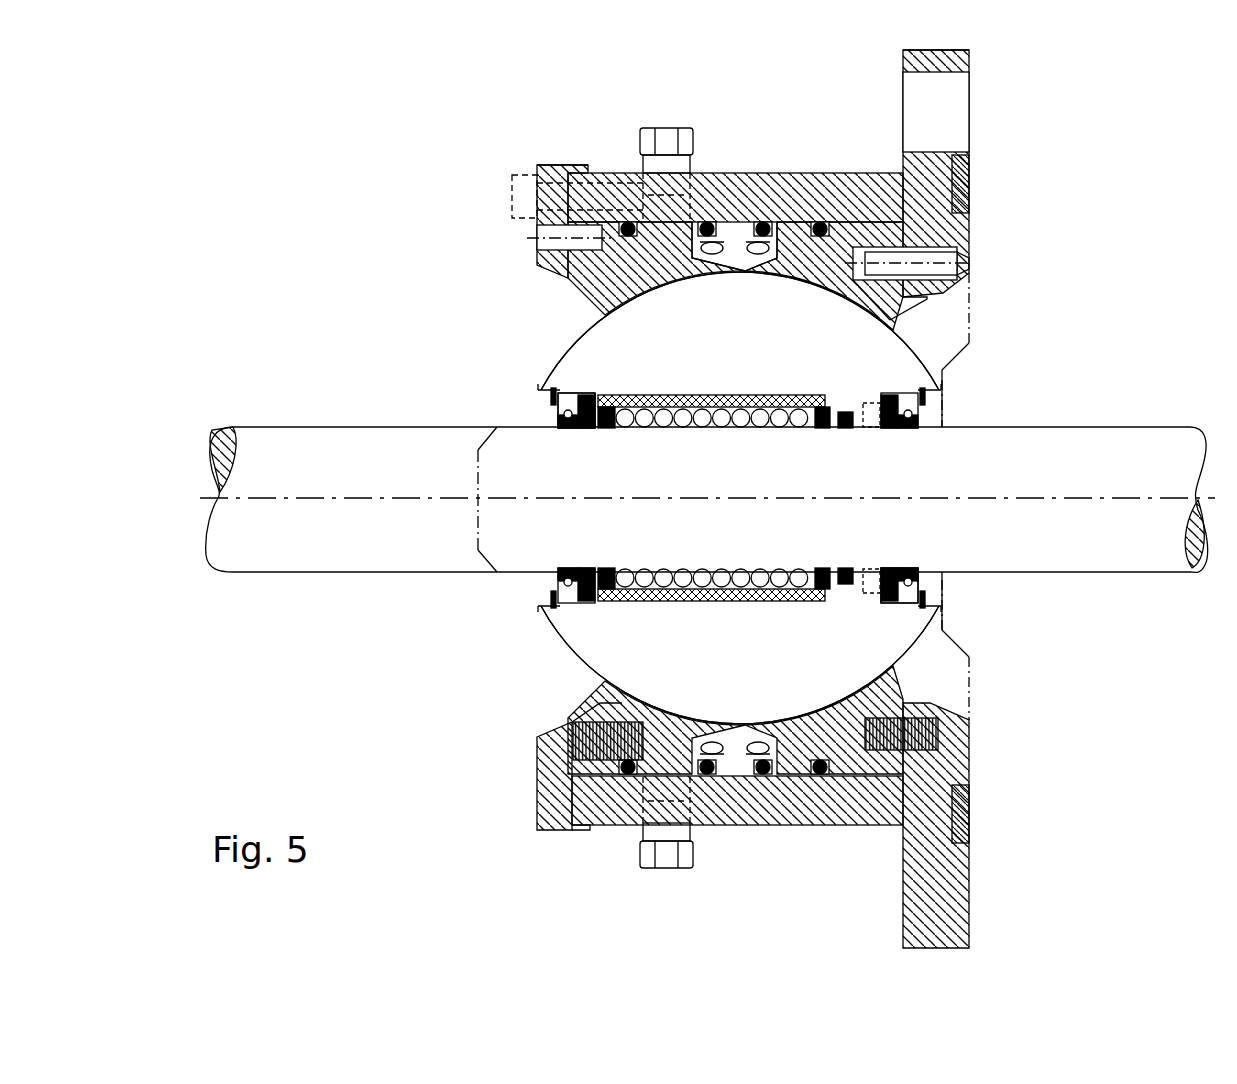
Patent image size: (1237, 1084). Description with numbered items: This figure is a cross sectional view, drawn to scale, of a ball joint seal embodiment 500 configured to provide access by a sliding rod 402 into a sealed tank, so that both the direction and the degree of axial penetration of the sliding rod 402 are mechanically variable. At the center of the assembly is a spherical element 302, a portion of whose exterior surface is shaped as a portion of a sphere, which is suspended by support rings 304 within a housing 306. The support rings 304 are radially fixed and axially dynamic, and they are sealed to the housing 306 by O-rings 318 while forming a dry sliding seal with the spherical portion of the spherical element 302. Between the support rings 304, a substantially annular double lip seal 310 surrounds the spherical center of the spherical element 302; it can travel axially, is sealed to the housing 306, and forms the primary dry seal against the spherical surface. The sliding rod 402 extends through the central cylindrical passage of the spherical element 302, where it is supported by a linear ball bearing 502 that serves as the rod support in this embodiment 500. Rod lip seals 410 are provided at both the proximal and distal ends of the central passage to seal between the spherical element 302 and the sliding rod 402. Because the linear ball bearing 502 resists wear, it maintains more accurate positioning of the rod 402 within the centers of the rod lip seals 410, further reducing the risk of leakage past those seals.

The embodiment 500 is at (452, 148).
The spherical element 302 is at (768, 332).
The support rings 304 is at (905, 316).
The housing 306 is at (808, 173).
The double lip seal 310 is at (740, 232).
The O-rings 318 is at (942, 737).
The sliding rod 402 is at (707, 499).
The rod lip seals 410 is at (538, 588).
The linear ball bearing 502 is at (700, 598).